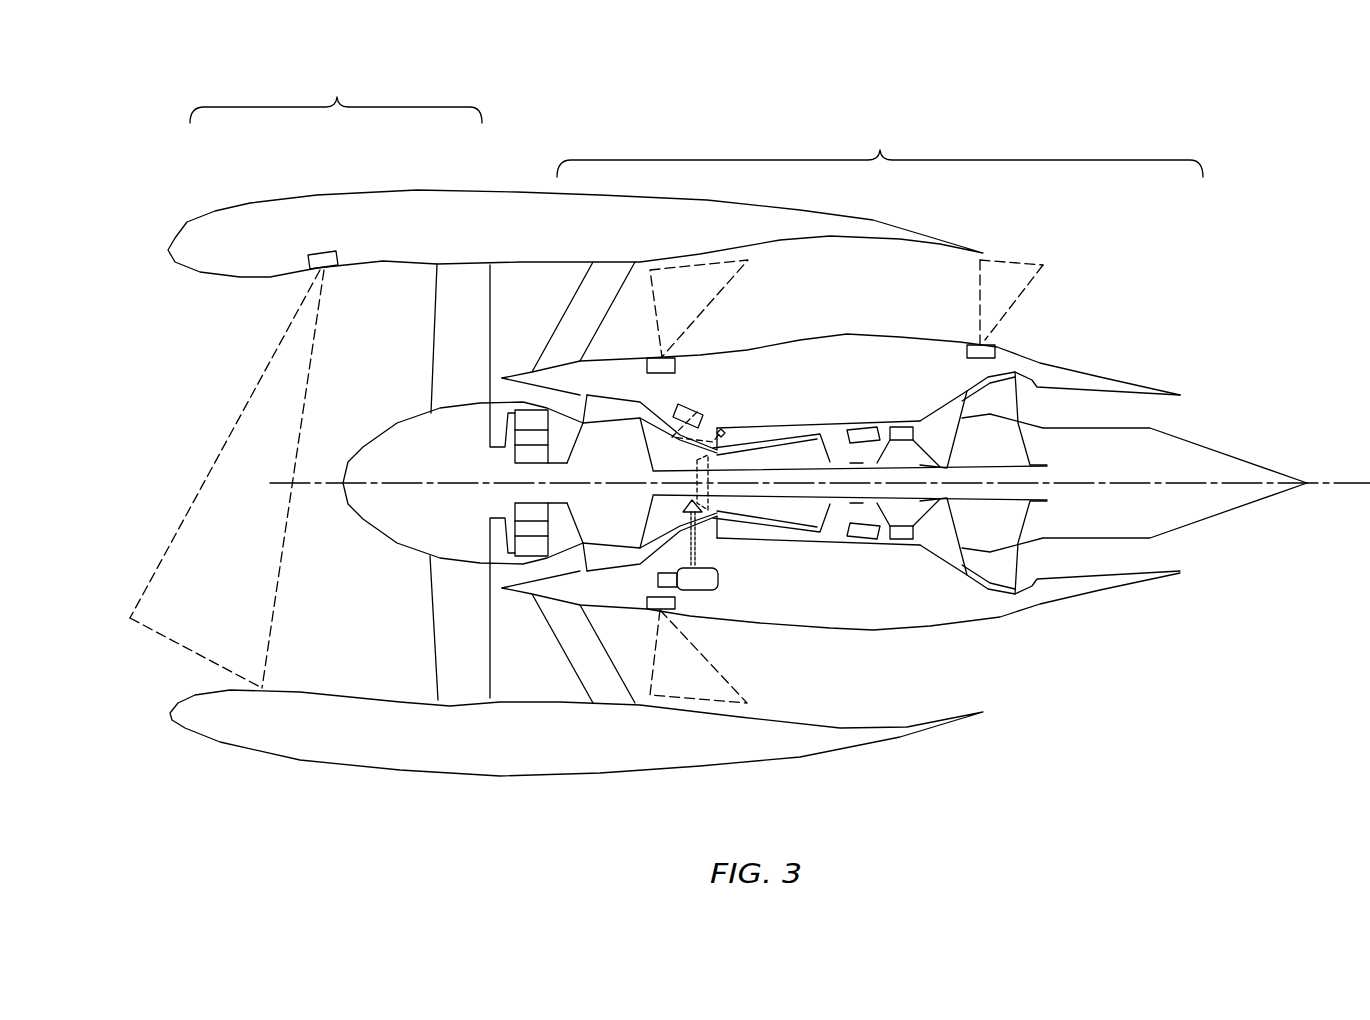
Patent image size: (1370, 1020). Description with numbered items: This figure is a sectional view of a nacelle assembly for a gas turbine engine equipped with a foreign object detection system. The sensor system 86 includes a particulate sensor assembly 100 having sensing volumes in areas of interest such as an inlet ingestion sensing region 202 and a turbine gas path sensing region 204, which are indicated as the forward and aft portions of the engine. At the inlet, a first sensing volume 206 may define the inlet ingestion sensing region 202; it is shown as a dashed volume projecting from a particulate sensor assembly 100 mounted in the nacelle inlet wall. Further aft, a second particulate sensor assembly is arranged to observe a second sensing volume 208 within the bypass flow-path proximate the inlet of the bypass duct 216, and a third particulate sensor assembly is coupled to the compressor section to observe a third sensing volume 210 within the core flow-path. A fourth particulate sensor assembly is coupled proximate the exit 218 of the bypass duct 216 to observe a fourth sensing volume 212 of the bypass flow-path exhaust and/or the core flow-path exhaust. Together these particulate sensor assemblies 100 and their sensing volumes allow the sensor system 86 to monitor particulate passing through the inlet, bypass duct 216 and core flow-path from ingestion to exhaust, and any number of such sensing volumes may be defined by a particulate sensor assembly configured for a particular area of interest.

The sensor system 86 is at (326, 230).
The particulate sensor assembly 100 is at (330, 268).
The inlet ingestion sensing region 202 is at (336, 93).
The turbine gas path sensing region 204 is at (880, 147).
The first sensing volume 206 is at (257, 407).
The second sensing volume 208 is at (697, 257).
The third sensing volume 210 is at (746, 438).
The fourth sensing volume 212 is at (1015, 290).
The bypass duct 216 is at (902, 296).
The exit of bypass duct 218 is at (974, 685).